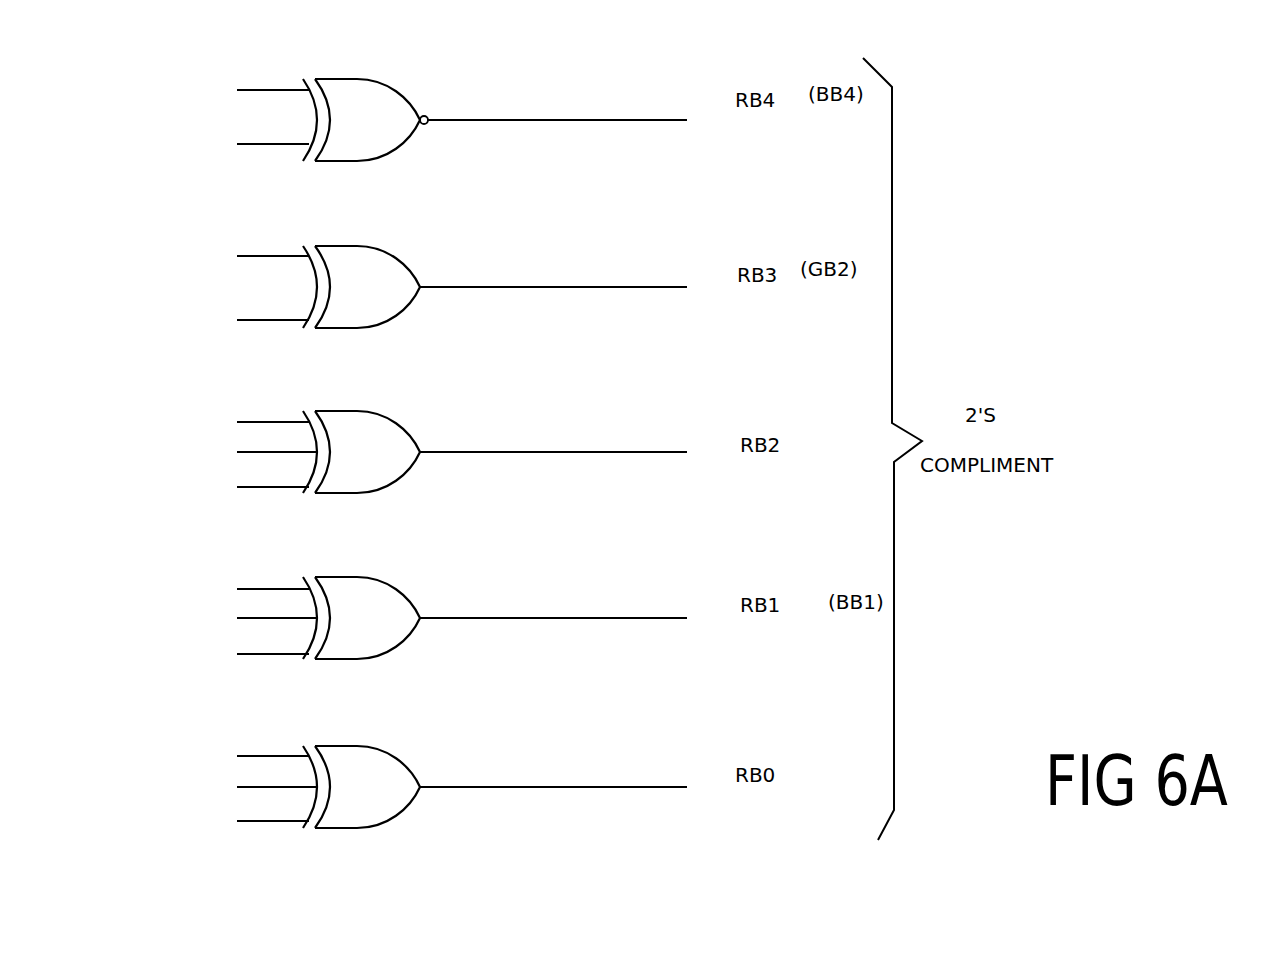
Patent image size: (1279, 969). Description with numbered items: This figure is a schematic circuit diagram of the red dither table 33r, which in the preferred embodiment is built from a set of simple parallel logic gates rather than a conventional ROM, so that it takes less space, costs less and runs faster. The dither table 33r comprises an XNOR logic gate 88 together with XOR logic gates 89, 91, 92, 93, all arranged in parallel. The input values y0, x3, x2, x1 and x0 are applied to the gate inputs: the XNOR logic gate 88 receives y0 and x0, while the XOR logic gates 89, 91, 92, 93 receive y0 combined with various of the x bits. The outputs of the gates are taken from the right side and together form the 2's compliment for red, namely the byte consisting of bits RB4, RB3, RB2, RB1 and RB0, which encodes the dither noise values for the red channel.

The XNOR logic gate 88 is at (405, 97).
The XOR logic gate 89 is at (403, 263).
The XOR logic gate 91 is at (403, 432).
The XOR logic gate 92 is at (403, 591).
The XOR logic gate 93 is at (387, 752).
The dither table 33r is at (908, 46).